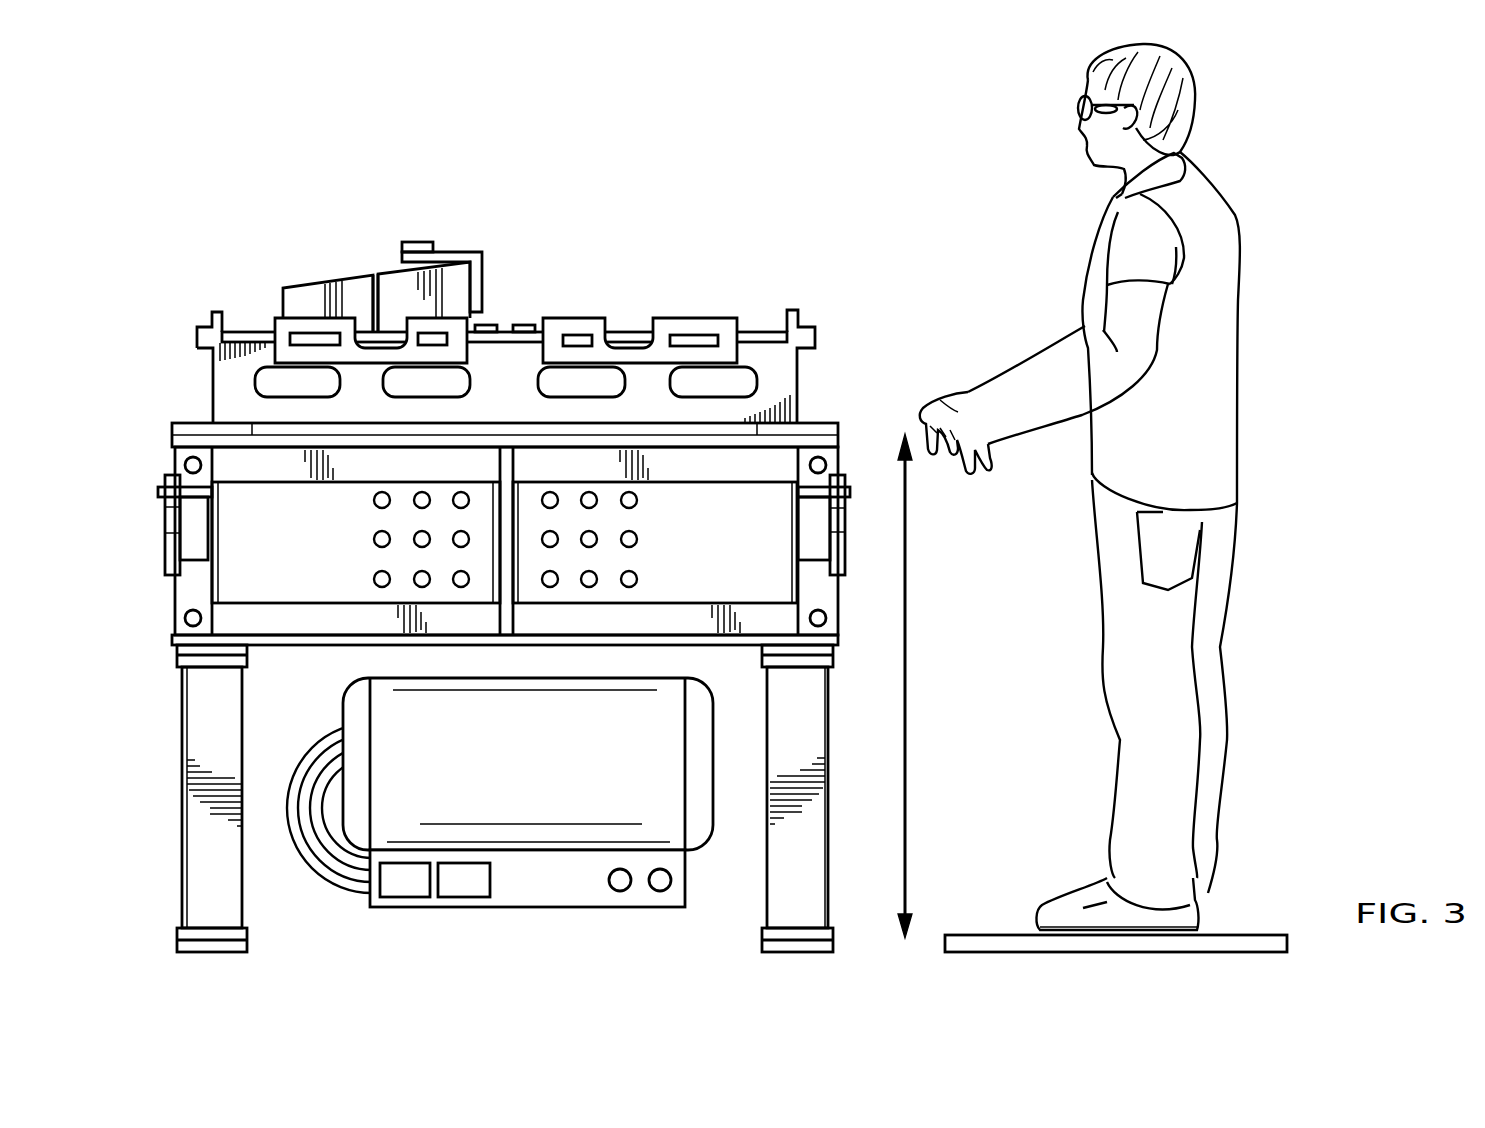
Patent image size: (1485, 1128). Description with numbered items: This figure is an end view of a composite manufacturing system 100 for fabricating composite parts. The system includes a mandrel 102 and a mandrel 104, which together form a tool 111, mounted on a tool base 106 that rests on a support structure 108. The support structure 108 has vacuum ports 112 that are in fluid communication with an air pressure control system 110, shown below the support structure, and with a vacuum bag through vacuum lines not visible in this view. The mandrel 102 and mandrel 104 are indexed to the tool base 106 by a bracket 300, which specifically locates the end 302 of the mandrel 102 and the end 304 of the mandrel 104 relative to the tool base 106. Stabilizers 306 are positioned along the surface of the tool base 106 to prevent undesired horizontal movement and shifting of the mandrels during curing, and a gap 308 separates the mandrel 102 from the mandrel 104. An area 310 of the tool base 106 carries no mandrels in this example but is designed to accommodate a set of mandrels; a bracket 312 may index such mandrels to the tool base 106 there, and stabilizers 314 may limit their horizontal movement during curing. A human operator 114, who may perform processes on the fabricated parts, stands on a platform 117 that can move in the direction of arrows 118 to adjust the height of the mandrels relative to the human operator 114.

The composite manufacturing system 100 is at (216, 141).
The mandrel 102 is at (391, 262).
The mandrel 104 is at (323, 268).
The tool base 106 is at (797, 386).
The support structure 108 is at (183, 594).
The air pressure control system 110 is at (462, 908).
The tool 111 is at (434, 183).
The vacuum ports 112 is at (362, 517).
The human operator 114 is at (1240, 224).
The platform 117 is at (1248, 934).
The arrows 118 is at (908, 684).
The bracket 300 is at (275, 325).
The end 302 is at (455, 275).
The end 304 is at (295, 292).
The stabilizers 306 is at (493, 308).
The gap 308 is at (372, 265).
The area 310 is at (636, 298).
The bracket 312 is at (723, 320).
The stabilizers 314 is at (534, 307).